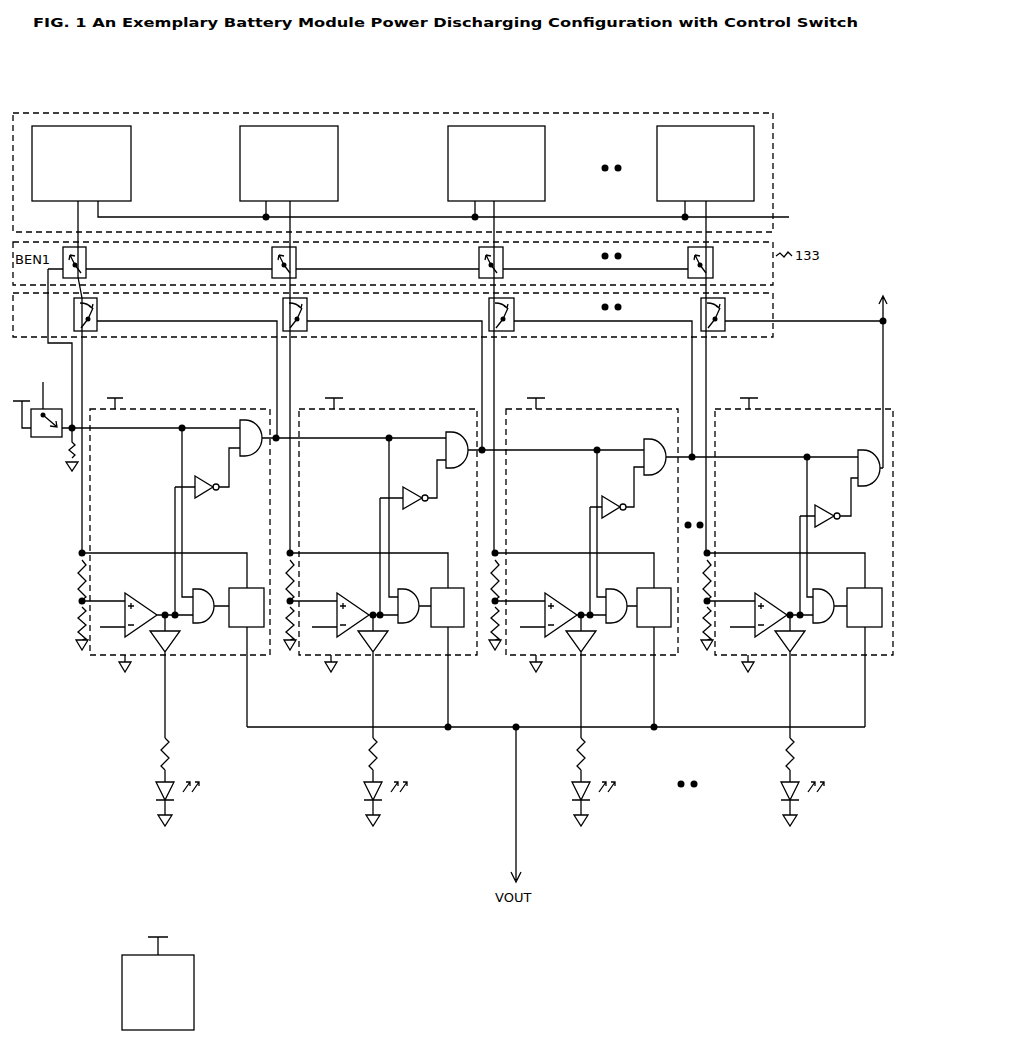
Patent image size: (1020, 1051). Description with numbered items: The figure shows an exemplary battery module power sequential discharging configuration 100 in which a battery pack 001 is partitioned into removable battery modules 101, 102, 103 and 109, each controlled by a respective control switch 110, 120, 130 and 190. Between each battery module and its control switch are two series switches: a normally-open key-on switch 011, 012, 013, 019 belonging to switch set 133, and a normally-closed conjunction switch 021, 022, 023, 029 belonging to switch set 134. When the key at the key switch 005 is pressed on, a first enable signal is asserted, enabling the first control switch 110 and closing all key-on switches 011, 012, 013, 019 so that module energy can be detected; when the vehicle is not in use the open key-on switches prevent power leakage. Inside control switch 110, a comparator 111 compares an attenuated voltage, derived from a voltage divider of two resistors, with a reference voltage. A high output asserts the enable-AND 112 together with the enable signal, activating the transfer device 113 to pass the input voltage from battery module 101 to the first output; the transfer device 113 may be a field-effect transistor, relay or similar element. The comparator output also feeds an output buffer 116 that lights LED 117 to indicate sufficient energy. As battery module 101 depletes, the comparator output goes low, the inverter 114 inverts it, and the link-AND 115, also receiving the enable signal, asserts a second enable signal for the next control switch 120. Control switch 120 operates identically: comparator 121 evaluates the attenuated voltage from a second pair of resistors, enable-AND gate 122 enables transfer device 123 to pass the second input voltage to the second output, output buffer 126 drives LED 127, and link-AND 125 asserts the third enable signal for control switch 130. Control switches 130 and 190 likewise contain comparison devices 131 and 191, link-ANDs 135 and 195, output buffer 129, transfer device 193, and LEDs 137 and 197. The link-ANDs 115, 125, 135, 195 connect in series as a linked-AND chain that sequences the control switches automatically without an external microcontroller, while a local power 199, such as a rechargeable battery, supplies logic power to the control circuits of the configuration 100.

The battery pack 001 is at (745, 113).
The battery module 101 is at (81, 163).
The battery module 102 is at (289, 163).
The battery module 103 is at (496, 163).
The battery module 109 is at (705, 163).
The key-on switch 011 is at (87, 254).
The key-on switch 012 is at (301, 257).
The key-on switch 013 is at (507, 257).
The key-on switch 019 is at (715, 258).
The conjunction switch 021 is at (103, 310).
The conjunction switch 022 is at (308, 308).
The conjunction switch 023 is at (516, 309).
The conjunction switch 029 is at (739, 305).
The switch set 133 is at (644, 630).
The switch set 134 is at (776, 304).
The key switch 005 is at (40, 441).
The control switch 110 is at (187, 404).
The control switch 120 is at (402, 404).
The control switch 130 is at (607, 404).
The control switch 190 is at (823, 404).
The link-AND 115 is at (238, 425).
The link-AND 125 is at (435, 440).
The link-AND 135 is at (638, 431).
The link-AND 195 is at (852, 431).
The inverter 114 is at (203, 500).
The enable-AND 112 is at (210, 584).
The enable-AND gate 122 is at (416, 592).
The comparator 111 is at (143, 601).
The comparator 121 is at (351, 600).
The comparison device 131 is at (561, 602).
The comparison device 191 is at (771, 599).
The output buffer 116 is at (176, 640).
The output buffer 126 is at (384, 640).
The output buffer 129 is at (801, 640).
The transfer device 113 is at (236, 630).
The transfer device 123 is at (437, 630).
The transfer device 193 is at (854, 630).
The LED 117 is at (190, 814).
The LED 127 is at (394, 800).
The LED 137 is at (602, 800).
The LED 197 is at (811, 800).
The battery module power sequential discharging configuration 100 is at (97, 707).
The local power 199 is at (158, 972).